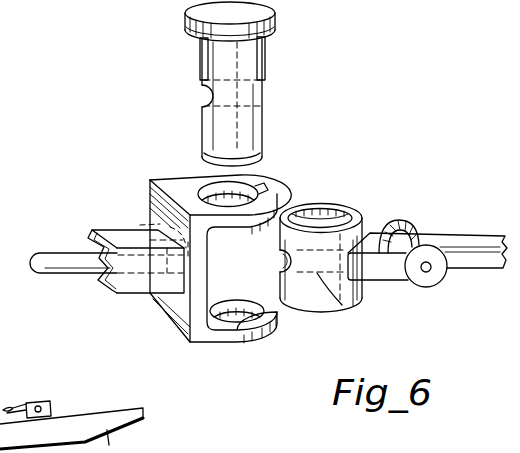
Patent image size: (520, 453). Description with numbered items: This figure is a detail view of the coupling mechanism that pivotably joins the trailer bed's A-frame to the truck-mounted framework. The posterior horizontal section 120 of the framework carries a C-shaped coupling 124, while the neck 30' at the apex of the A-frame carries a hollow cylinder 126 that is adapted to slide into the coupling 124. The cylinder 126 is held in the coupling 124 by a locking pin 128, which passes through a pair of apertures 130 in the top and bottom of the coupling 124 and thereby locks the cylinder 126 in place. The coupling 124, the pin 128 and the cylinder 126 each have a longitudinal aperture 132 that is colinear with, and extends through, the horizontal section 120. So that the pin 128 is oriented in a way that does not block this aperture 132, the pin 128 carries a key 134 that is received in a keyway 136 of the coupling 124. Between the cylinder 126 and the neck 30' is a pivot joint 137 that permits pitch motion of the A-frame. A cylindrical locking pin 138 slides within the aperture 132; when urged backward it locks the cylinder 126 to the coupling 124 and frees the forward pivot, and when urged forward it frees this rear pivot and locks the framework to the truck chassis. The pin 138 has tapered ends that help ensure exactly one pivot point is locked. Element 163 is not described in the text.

The neck 30' is at (427, 256).
The posterior horizontal section 120 is at (140, 292).
The C-shaped coupling 124 is at (231, 259).
The hollow cylinder 126 is at (330, 314).
The locking pin 128 is at (204, 68).
The apertures 130 is at (214, 192).
The longitudinal aperture 132 is at (203, 96).
The key 134 is at (268, 68).
The keyway 136 is at (263, 188).
The pivot joint 137 is at (431, 287).
The cylindrical locking pin 138 is at (60, 256).
The block 163 is at (48, 400).